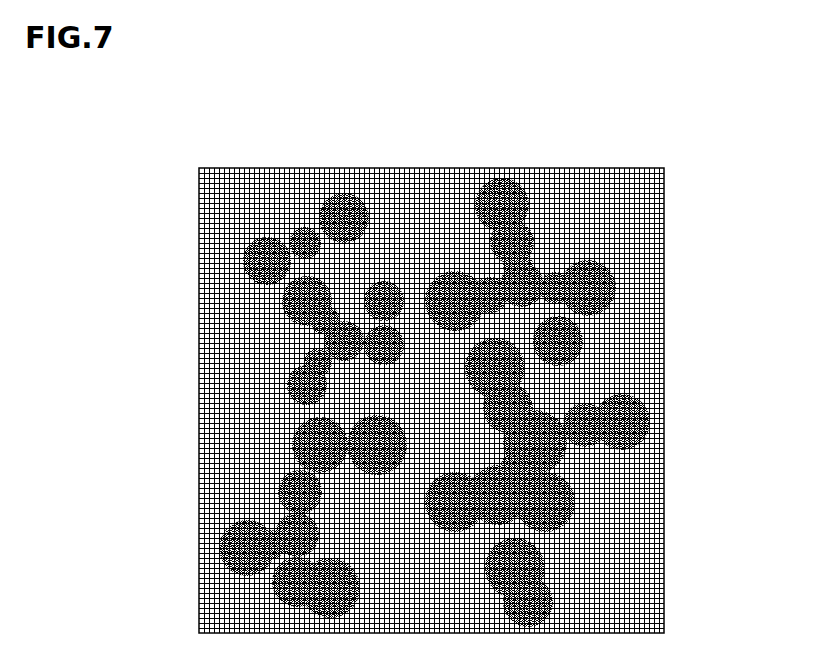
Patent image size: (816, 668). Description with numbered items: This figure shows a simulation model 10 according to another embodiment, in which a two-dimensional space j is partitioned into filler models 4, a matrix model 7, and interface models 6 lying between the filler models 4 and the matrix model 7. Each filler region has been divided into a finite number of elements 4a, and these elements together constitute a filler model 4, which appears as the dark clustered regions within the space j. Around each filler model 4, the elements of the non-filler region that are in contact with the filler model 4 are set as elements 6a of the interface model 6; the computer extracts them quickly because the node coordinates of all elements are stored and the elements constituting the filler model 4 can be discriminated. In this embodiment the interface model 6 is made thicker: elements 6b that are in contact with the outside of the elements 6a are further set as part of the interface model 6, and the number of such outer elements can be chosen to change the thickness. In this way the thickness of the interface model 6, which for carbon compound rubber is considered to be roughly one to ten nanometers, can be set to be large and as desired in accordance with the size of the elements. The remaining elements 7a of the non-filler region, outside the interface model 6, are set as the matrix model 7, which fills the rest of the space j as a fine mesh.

The simulation model 10 is at (437, 158).
The matrix model 7 is at (556, 101).
The elements outside the interface model 7a is at (570, 169).
The interface model 6 is at (130, 283).
The elements in contact with the filler model 6a is at (247, 241).
The elements in contact with an outside of the elements 6a 6b is at (247, 276).
The filler model 4 is at (130, 347).
The elements 4a is at (287, 300).
The two-dimensional space j is at (285, 168).